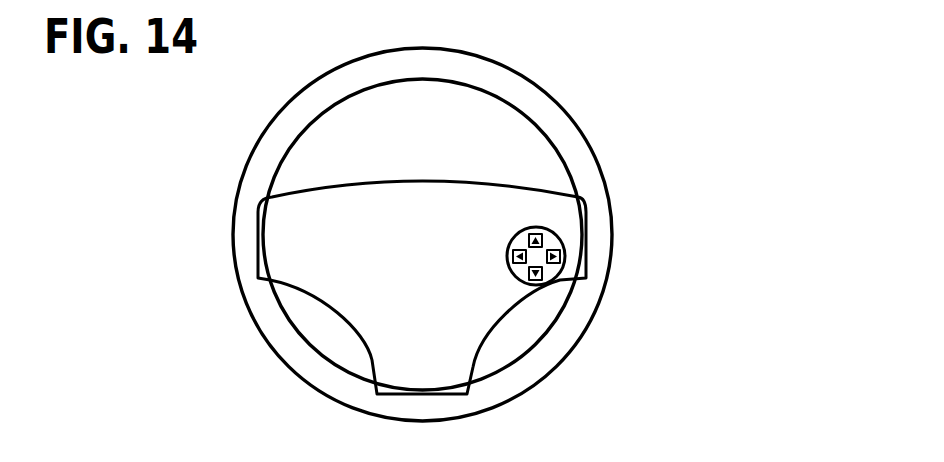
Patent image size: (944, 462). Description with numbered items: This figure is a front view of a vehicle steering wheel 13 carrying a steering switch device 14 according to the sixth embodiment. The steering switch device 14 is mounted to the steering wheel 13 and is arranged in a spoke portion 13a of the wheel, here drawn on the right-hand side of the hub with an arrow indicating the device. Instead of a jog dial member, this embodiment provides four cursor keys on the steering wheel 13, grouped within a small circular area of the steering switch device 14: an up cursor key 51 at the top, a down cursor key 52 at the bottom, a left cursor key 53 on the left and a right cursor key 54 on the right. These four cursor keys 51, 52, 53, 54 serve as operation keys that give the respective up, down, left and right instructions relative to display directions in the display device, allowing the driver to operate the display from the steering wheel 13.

The steering wheel 13 is at (497, 62).
The spoke portion 13a is at (492, 182).
The steering switch device 14 is at (539, 218).
The up cursor key 51 is at (542, 239).
The down cursor key 52 is at (543, 276).
The left cursor key 53 is at (520, 263).
The right cursor key 54 is at (559, 256).